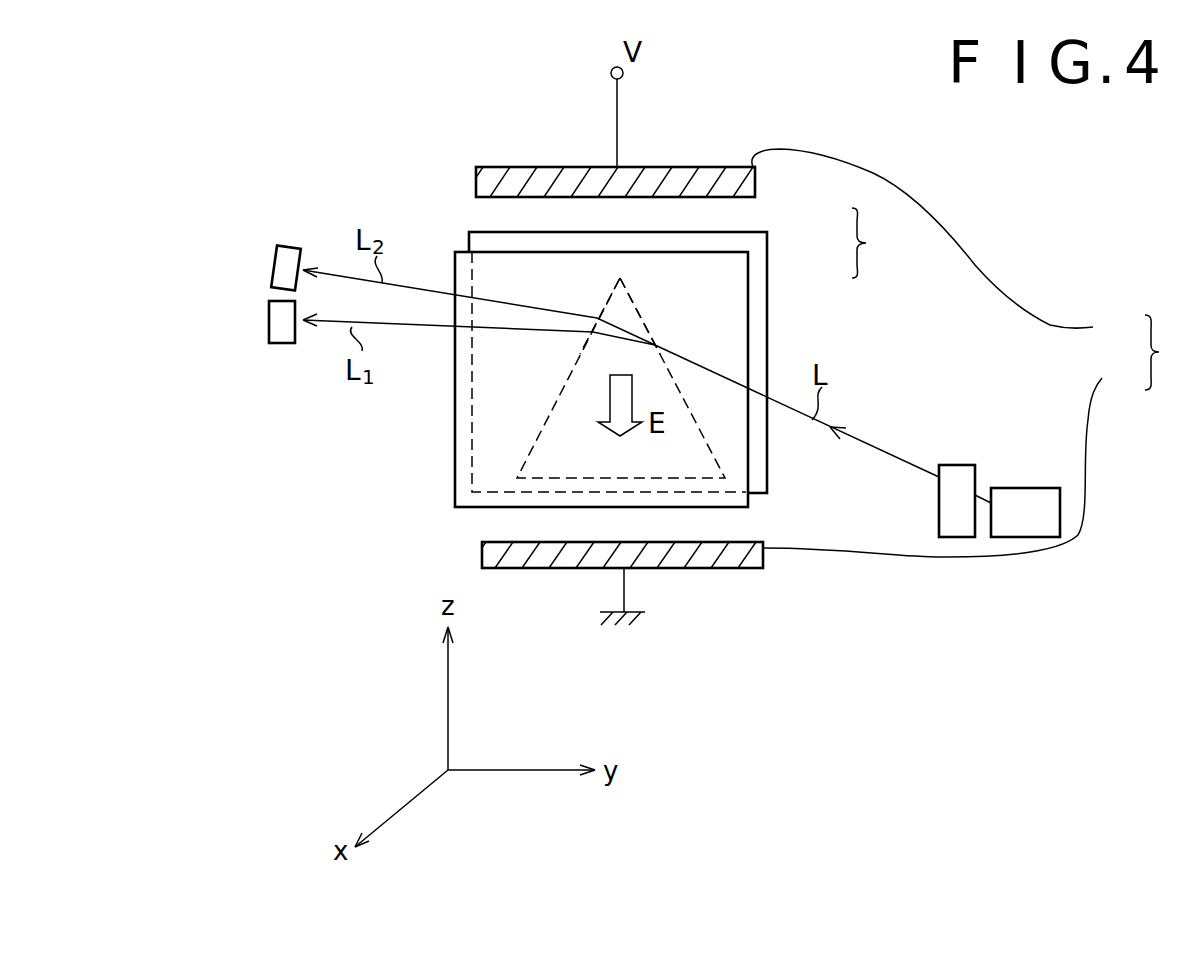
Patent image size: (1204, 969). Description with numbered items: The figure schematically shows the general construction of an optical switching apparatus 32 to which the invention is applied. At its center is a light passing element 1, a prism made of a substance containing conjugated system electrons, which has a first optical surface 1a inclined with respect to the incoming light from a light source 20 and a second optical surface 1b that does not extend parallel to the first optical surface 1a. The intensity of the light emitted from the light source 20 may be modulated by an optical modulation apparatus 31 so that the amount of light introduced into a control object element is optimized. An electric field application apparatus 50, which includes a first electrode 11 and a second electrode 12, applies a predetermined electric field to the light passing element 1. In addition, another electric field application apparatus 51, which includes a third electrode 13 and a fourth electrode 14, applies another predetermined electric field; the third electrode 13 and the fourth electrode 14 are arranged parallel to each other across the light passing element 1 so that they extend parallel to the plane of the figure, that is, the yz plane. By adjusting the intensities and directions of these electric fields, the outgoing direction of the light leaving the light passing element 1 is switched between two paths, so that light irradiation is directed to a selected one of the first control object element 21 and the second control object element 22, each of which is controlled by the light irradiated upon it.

The light passing element 1 is at (703, 435).
The first optical surface 1a is at (645, 320).
The second optical surface 1b is at (557, 397).
The first electrode 11 is at (802, 247).
The second electrode 12 is at (804, 493).
The third electrode 13 is at (747, 290).
The fourth electrode 14 is at (750, 231).
The light source 20 is at (1028, 488).
The first control object element 21 is at (268, 322).
The second control object element 22 is at (273, 268).
The optical modulation apparatus 31 is at (955, 465).
The optical switching apparatus 32 is at (917, 706).
The electric field application apparatus 50 is at (1203, 368).
The electric field application apparatus 51 is at (909, 263).